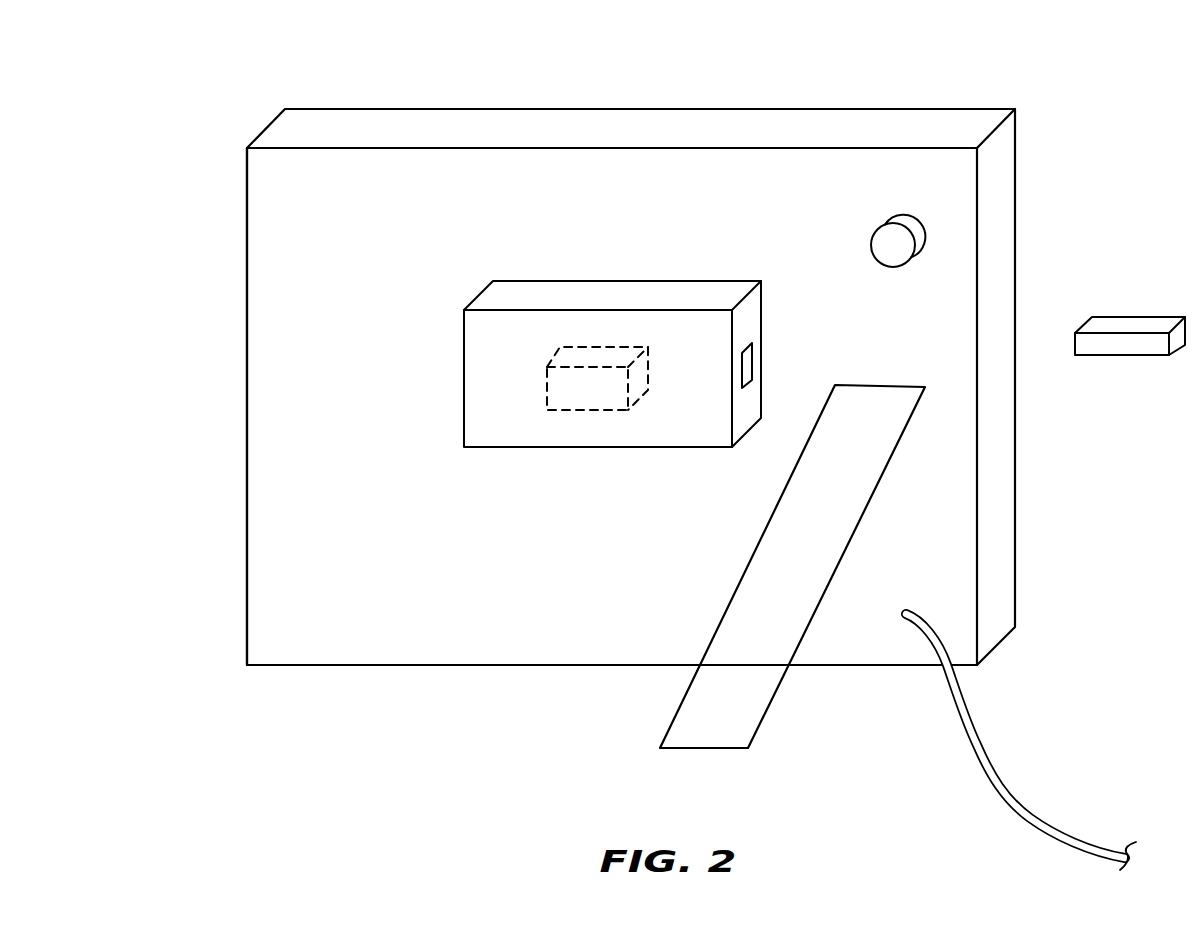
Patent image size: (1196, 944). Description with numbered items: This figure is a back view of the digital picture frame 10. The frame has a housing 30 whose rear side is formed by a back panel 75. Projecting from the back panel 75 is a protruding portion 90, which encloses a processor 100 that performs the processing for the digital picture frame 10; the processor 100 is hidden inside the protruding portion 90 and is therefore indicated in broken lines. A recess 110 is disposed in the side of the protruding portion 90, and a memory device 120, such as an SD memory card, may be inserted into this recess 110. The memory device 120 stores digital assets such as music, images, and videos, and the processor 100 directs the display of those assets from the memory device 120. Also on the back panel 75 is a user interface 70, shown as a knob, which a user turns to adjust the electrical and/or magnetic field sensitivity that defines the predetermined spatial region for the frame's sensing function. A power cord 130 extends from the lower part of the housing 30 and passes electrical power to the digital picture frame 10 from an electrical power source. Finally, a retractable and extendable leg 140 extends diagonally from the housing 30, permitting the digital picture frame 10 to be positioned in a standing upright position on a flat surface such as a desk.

The digital picture frame 10 is at (610, 41).
The housing 30 is at (924, 94).
The back panel 75 is at (265, 380).
The protruding portion 90 is at (612, 292).
The processor 100 is at (585, 403).
The recess 110 is at (747, 362).
The user interface 70 is at (893, 267).
The memory device 120 is at (1133, 325).
The power cord 130 is at (1062, 837).
The retractable and extendable leg 140 is at (757, 575).